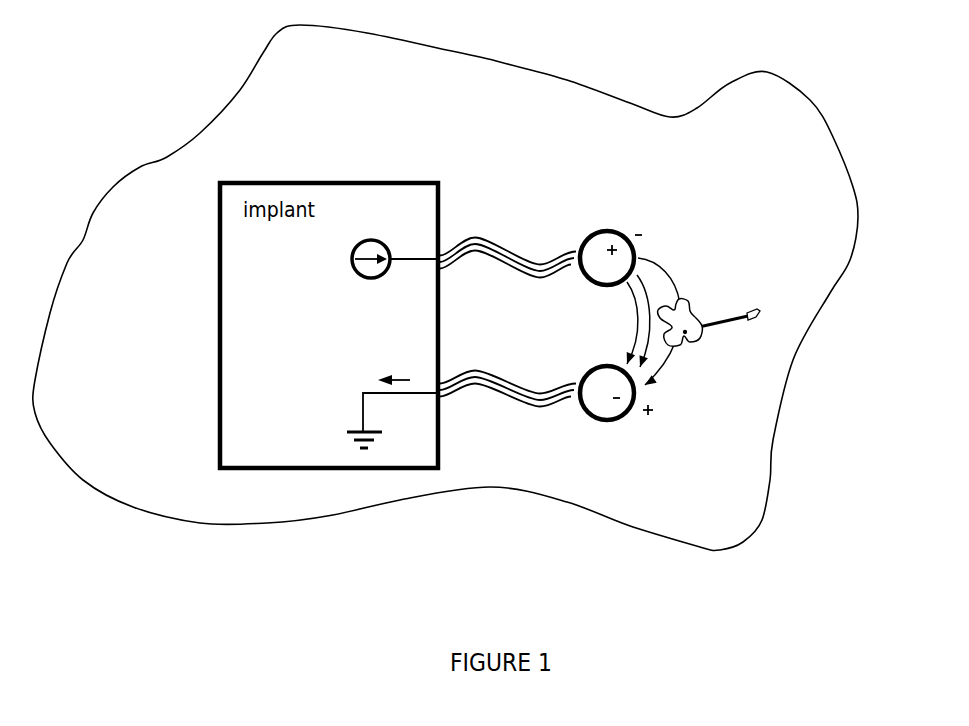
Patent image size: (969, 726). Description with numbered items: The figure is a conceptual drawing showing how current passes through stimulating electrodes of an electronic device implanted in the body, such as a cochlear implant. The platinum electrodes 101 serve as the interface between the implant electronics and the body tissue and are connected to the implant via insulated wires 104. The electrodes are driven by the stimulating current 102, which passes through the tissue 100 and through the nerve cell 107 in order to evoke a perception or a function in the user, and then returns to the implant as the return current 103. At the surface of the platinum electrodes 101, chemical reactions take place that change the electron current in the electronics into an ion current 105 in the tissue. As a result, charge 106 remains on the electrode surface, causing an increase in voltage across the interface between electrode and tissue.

The tissue 100 is at (442, 100).
The platinum electrodes 101 is at (585, 238).
The stimulating current 102 is at (356, 276).
The return current 103 is at (378, 379).
The insulated wires 104 is at (476, 252).
The ion current 105 is at (658, 280).
The charge 106 is at (636, 407).
The nerve cell 107 is at (695, 313).